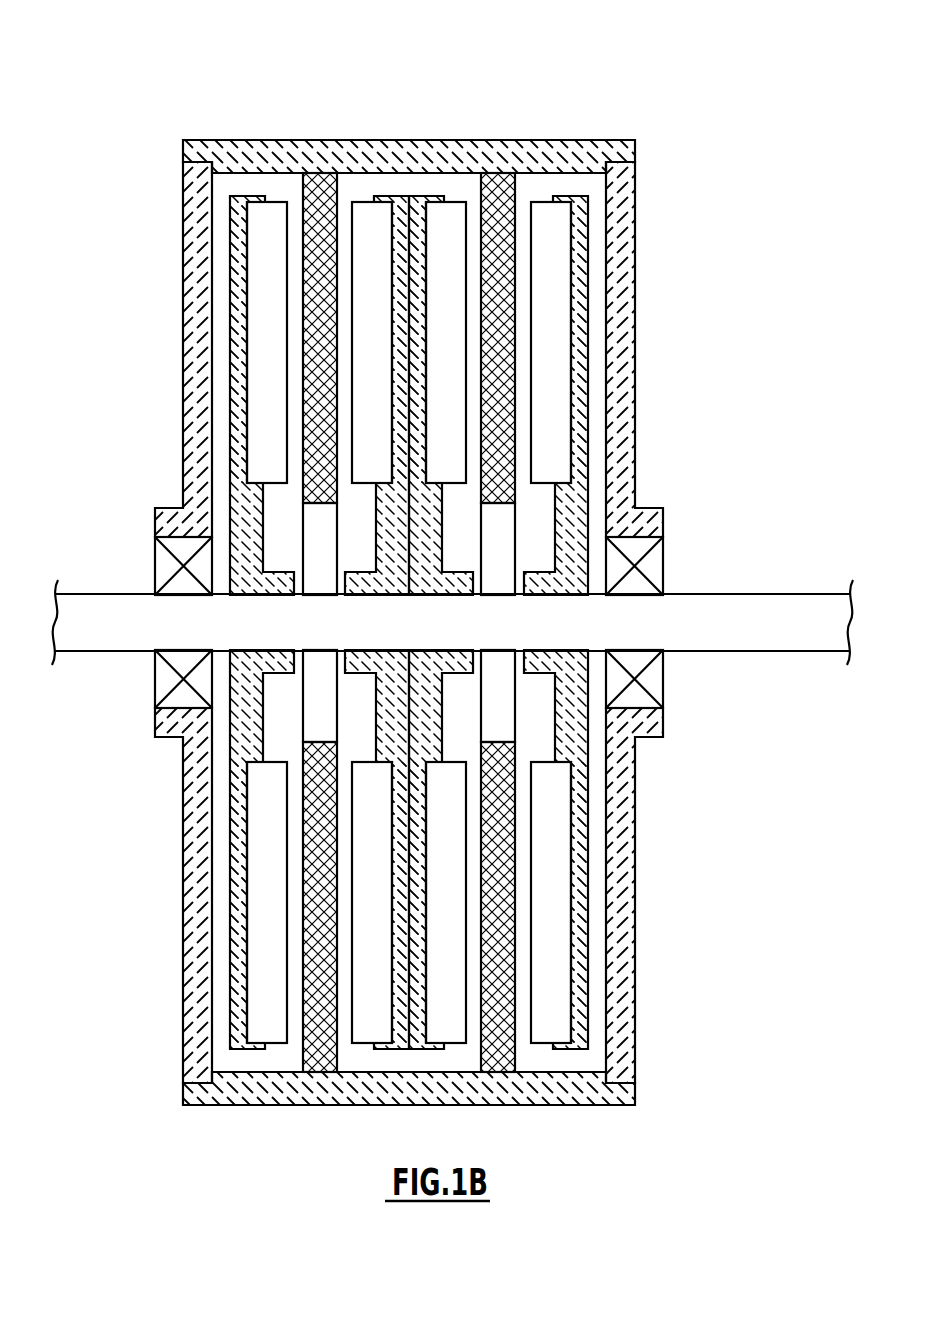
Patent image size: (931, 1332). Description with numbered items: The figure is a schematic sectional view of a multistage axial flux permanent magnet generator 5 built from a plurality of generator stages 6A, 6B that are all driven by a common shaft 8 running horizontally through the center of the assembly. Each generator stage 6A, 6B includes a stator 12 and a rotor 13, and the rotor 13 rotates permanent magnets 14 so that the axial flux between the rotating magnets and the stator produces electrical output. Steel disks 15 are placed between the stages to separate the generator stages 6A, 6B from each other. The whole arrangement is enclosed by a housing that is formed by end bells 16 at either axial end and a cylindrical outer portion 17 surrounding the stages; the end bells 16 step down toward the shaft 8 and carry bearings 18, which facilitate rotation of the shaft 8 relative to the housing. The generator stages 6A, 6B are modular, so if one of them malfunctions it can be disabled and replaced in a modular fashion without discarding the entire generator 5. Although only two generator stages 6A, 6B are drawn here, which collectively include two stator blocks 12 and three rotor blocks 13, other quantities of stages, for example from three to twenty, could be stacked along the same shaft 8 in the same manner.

The multistage axial flux permanent magnet generator 5 is at (798, 54).
The generator stage 6A is at (410, 113).
The generator stage 6B is at (608, 113).
The common shaft 8 is at (713, 638).
The stator 12 is at (317, 188).
The rotor 13 is at (232, 243).
The permanent magnets 14 is at (277, 352).
The steel disks 15 is at (237, 402).
The end bells 16 is at (183, 478).
The cylindrical outer portion 17 is at (621, 140).
The bearings 18 is at (162, 567).